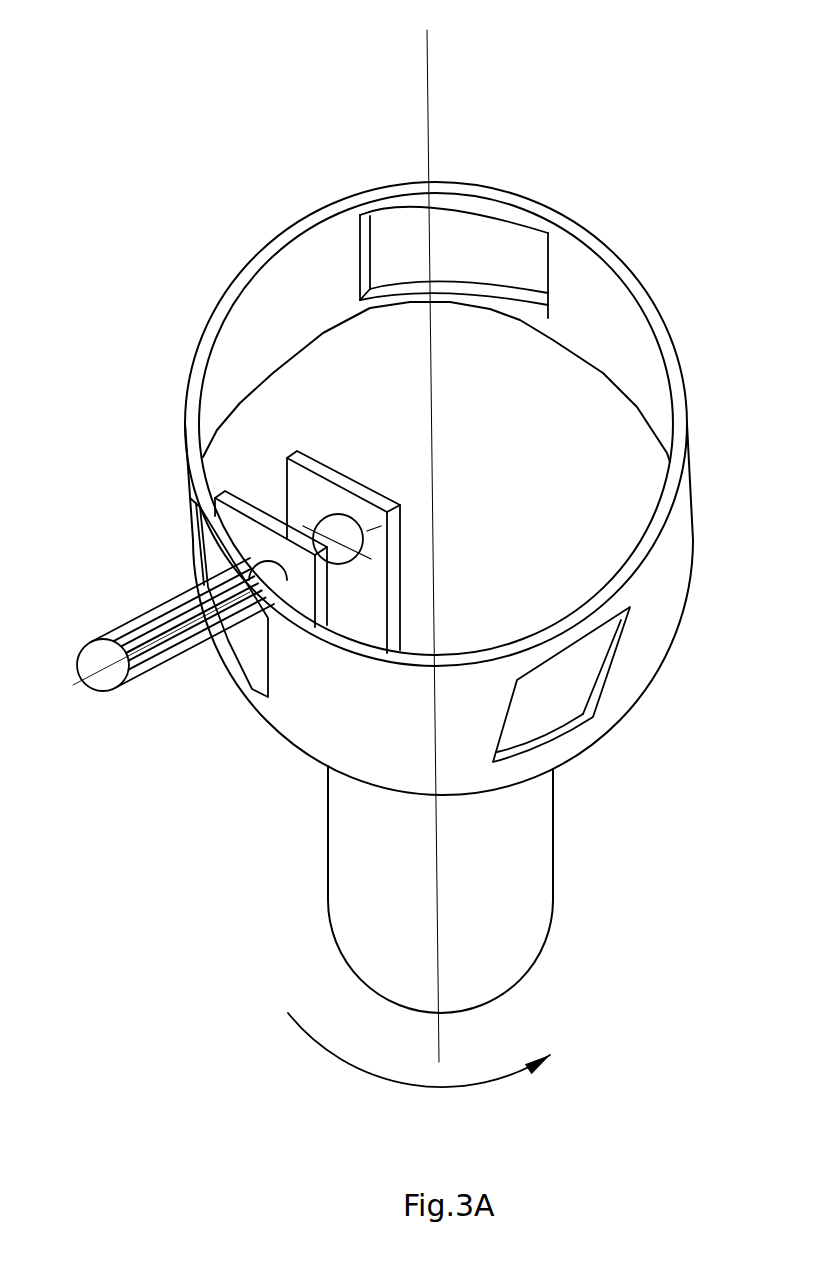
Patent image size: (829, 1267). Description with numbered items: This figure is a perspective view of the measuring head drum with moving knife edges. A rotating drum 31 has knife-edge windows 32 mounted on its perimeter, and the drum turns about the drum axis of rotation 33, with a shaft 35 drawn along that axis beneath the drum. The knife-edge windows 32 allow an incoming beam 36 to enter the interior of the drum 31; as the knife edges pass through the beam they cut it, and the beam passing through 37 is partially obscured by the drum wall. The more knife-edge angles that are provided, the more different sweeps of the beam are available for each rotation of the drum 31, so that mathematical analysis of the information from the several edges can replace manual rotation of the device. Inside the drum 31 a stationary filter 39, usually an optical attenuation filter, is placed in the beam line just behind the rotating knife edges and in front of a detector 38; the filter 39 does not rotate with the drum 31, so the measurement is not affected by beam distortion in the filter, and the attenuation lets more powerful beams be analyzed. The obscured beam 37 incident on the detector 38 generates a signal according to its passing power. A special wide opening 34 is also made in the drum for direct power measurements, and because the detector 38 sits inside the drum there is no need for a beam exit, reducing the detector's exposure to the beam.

The rotating drum 31 is at (688, 603).
The knife-edge windows 32 is at (480, 742).
The drum axis of rotation 33 is at (441, 948).
The wide opening 34 is at (548, 277).
The drive shaft 35 is at (556, 896).
The beam 36 is at (140, 608).
The passing beam 37 is at (402, 516).
The detector 38 is at (321, 457).
The stationary filter 39 is at (240, 492).